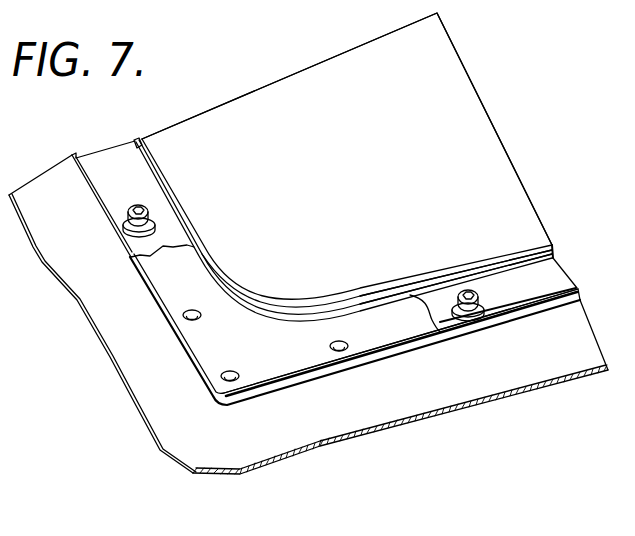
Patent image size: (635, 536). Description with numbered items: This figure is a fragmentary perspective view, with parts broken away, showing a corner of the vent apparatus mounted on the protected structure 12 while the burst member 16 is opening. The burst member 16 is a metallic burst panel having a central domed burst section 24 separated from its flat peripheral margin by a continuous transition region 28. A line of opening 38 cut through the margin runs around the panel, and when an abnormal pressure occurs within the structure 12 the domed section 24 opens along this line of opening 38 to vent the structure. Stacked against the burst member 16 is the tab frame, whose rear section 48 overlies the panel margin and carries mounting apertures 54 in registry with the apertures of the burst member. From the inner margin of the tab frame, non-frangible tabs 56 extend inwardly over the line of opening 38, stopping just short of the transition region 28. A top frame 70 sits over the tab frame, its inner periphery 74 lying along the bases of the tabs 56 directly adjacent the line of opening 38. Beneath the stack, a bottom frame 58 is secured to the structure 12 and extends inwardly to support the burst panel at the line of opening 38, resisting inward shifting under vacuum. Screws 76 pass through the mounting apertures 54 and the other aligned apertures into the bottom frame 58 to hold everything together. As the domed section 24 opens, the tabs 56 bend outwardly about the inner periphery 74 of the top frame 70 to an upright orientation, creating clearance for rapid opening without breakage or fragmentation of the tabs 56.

The structure 12 is at (427, 400).
The burst member 16 is at (302, 63).
The domed burst section 24 is at (448, 72).
The transition region 28 is at (188, 214).
The line of opening 38 is at (430, 279).
The rear section 48 is at (393, 333).
The mounting apertures 54 is at (191, 320).
The tabs 56 is at (240, 301).
The bottom frame 58 is at (268, 390).
The top frame 70 is at (113, 162).
The inner periphery 74 is at (482, 273).
The screws 76 is at (133, 227).